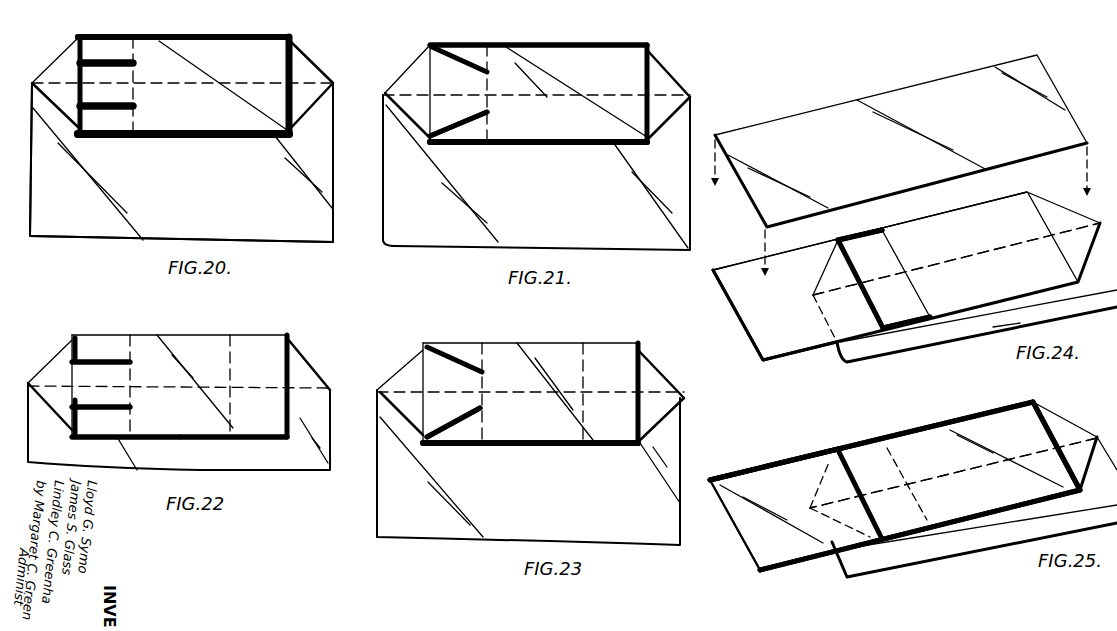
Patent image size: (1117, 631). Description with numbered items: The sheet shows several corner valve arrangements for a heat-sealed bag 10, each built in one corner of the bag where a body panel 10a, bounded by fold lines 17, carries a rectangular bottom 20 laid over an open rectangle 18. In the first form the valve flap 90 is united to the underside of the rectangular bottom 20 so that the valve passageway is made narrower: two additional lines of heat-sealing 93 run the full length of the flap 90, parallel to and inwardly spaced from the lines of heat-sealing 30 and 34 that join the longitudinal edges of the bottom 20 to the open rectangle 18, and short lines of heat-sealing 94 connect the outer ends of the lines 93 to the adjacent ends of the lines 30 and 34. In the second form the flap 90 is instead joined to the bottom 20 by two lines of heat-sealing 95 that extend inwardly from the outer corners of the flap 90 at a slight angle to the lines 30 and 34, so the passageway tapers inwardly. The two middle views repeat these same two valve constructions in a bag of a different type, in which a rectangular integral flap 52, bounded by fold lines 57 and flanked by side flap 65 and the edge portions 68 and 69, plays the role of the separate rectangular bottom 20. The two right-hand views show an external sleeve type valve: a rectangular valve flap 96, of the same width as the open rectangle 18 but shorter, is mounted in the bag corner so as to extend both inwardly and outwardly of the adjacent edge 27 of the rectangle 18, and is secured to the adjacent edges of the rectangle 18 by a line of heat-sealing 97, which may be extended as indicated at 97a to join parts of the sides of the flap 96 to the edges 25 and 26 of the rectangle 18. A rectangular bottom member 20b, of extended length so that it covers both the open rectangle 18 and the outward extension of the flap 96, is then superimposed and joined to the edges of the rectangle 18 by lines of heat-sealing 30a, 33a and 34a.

In FIG. 20, the envelope 10 is at (335, 237).
In FIG. 21, the envelope 10 is at (368, 226).
In FIG. 20, the envelope body panel 10a is at (181, 162).
In FIG. 20, the side flaps 17 is at (37, 112).
In FIG. 21, the side flaps 17 is at (372, 93).
In FIG. 20, the rectangular bottom 20 is at (183, 85).
In FIG. 21, the rectangular bottom 20 is at (538, 93).
In FIG. 24, the rectangular bottom member 20b is at (901, 165).
In FIG. 25, the rectangular bottom member 20b is at (913, 486).
In FIG. 20, the line of heat-sealing 30 is at (430, 46).
In FIG. 20, the line of heat-sealing 34 is at (217, 138).
In FIG. 21, the line of heat-sealing 34 is at (552, 144).
In FIG. 20, the valve flap 90 is at (135, 108).
In FIG. 21, the valve flap 90 is at (432, 120).
In FIG. 22, the valve flap 90 is at (110, 360).
In FIG. 23, the valve flap 90 is at (470, 385).
In FIG. 20, the lines of heat-sealing 93 is at (130, 66).
In FIG. 22, the lines of heat-sealing 93 is at (133, 410).
In FIG. 20, the lines of heat-sealing 94 is at (78, 53).
In FIG. 22, the lines of heat-sealing 94 is at (78, 338).
In FIG. 21, the lines of heat-sealing 95 is at (487, 72).
In FIG. 23, the lines of heat-sealing 95 is at (457, 353).
In FIG. 22, the rectangular integral flap 52 is at (179, 402).
In FIG. 23, the rectangular integral flap 52 is at (530, 444).
In FIG. 22, the side flaps 57 is at (32, 380).
In FIG. 23, the side flaps 57 is at (685, 398).
In FIG. 22, the side flap 65 is at (72, 437).
In FIG. 23, the side flap 65 is at (413, 425).
In FIG. 22, the adhesive bottom edge portion 68 is at (185, 438).
In FIG. 23, the adhesive bottom edge portion 68 is at (530, 445).
In FIG. 22, the adhesive bottom edge portion 69 is at (257, 437).
In FIG. 23, the adhesive bottom edge portion 69 is at (600, 445).
In FIG. 24, the rectangular valve flap 96 is at (775, 313).
In FIG. 25, the rectangular valve flap 96 is at (774, 509).
In FIG. 24, the line of heat-sealing 97 is at (884, 279).
In FIG. 25, the line of heat-sealing 97 is at (882, 493).
In FIG. 24, the extension of line of heat-sealing 97a is at (872, 232).
In FIG. 24, the open rectangle 18 is at (906, 276).
In FIG. 24, the edge of rectangle 25 is at (937, 213).
In FIG. 24, the edge of rectangle 26 is at (1019, 298).
In FIG. 25, the edge of rectangle 26 is at (974, 541).
In FIG. 24, the edge of rectangle 27 is at (878, 305).
In FIG. 25, the edge of rectangle 27 is at (872, 518).
In FIG. 25, the line of heat-sealing 30a is at (905, 435).
In FIG. 25, the line of heat-sealing 33a is at (1037, 417).
In FIG. 25, the line of heat-sealing 34a is at (993, 508).